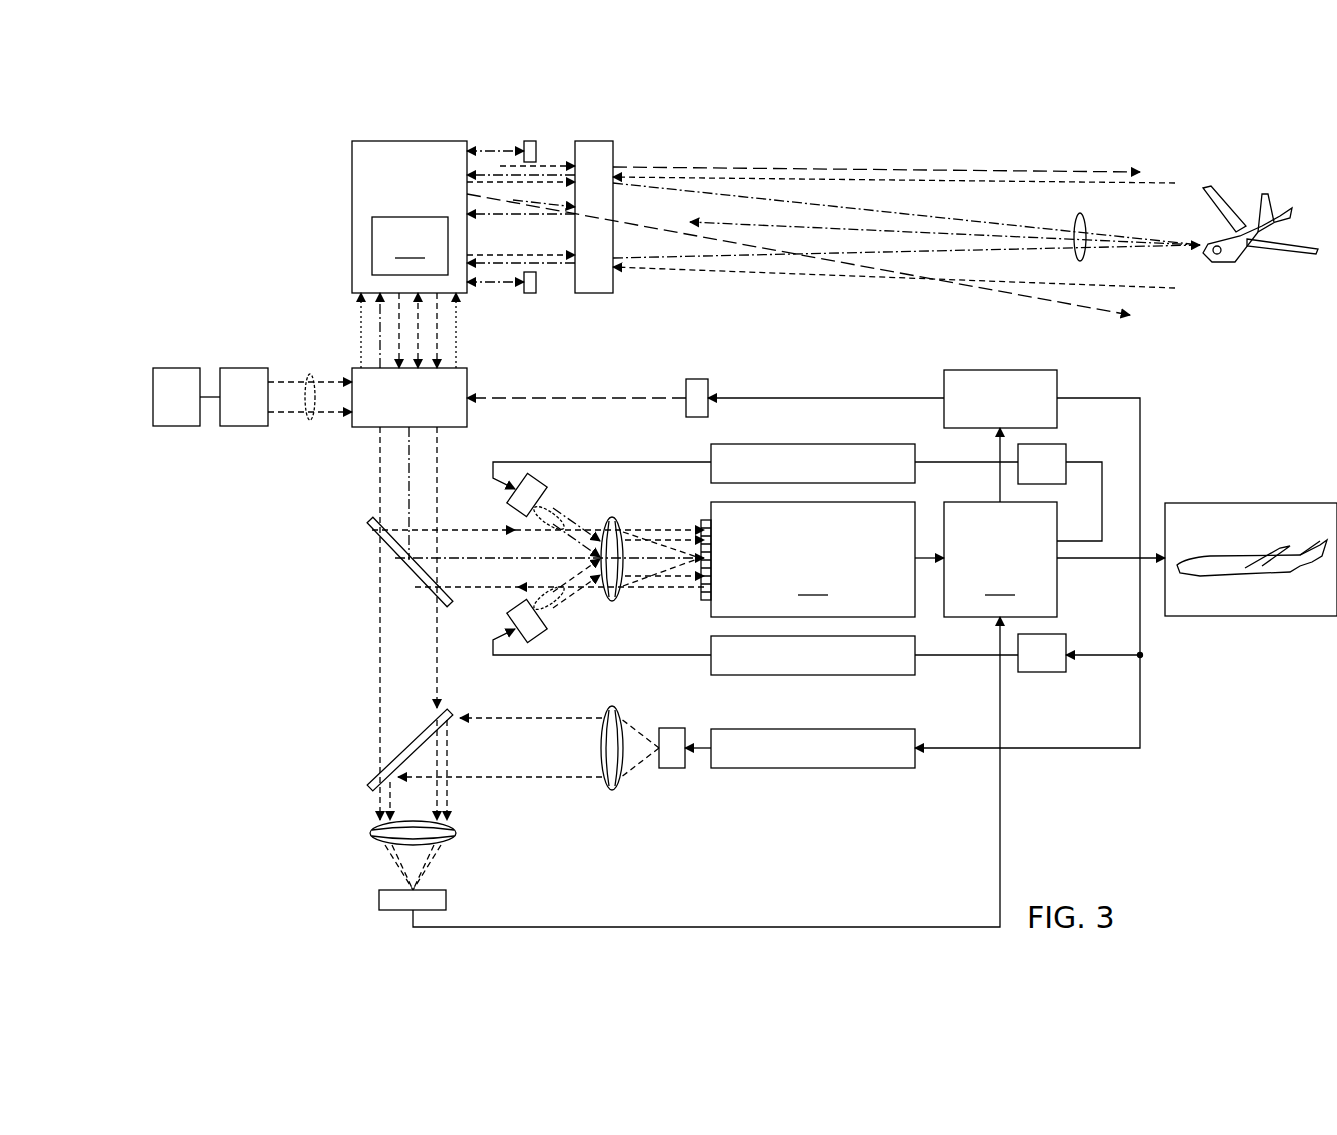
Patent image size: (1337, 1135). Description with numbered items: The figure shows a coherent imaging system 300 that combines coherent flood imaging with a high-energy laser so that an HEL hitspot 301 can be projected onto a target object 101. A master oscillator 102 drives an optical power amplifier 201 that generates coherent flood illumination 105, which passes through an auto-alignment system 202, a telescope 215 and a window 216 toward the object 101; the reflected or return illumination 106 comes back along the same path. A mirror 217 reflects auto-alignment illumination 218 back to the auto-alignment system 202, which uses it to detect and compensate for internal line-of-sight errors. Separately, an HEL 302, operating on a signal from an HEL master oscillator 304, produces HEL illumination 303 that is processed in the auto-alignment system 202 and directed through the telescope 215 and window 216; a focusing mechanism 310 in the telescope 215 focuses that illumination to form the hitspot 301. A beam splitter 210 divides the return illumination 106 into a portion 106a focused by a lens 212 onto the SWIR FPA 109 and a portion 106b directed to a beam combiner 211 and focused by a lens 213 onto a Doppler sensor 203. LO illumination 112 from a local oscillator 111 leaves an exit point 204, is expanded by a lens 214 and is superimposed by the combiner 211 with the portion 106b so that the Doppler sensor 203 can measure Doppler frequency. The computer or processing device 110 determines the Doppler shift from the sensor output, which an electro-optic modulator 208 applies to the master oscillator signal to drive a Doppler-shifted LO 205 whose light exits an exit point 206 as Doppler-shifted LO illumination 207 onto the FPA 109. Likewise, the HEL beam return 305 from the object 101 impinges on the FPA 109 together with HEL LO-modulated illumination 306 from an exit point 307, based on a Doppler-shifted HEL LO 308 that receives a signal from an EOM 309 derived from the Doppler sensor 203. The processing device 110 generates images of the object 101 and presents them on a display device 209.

The target object 101 is at (1278, 200).
The master oscillator 102 is at (1003, 370).
The coherent flood illumination 105 is at (1096, 318).
The reflected or return illumination 106 is at (902, 296).
The portion of return illumination 106a is at (486, 528).
The portion of return illumination 106b is at (378, 640).
The SWIR FPA 109 is at (822, 559).
The computer or processing device 110 is at (1054, 559).
The local oscillator 111 is at (815, 768).
The LO illumination 112 is at (532, 720).
The optical power amplifier 201 is at (696, 379).
The auto-alignment system 202 is at (370, 430).
The Doppler sensor 203 is at (379, 900).
The exit point 204 is at (676, 768).
The Doppler-shifted LO 205 is at (815, 675).
The exit point 206 is at (530, 652).
The Doppler-shifted LO illumination 207 is at (562, 610).
The electro-optic modulator 208 is at (1042, 672).
The display device 209 is at (1250, 617).
The beam splitter 210 is at (368, 517).
The beam combiner 211 is at (363, 790).
The lens 212 is at (625, 592).
The lens 213 is at (370, 834).
The lens 214 is at (612, 791).
The telescope 215 is at (352, 214).
The window 216 is at (592, 295).
The mirror 217 is at (530, 295).
The auto-alignment illumination 218 is at (418, 333).
The coherent imaging system 300 is at (240, 598).
The HEL hitspot 301 is at (1230, 262).
The HEL 302 is at (243, 368).
The HEL illumination 303 is at (1085, 220).
The HEL master oscillator 304 is at (176, 368).
The HEL beam return 305 is at (748, 228).
The HEL LO-modulated illumination 306 is at (562, 502).
The exit point 307 is at (538, 476).
The Doppler-shifted HEL LO 308 is at (711, 460).
The EOM 309 is at (1066, 462).
The focusing mechanism 310 is at (410, 246).